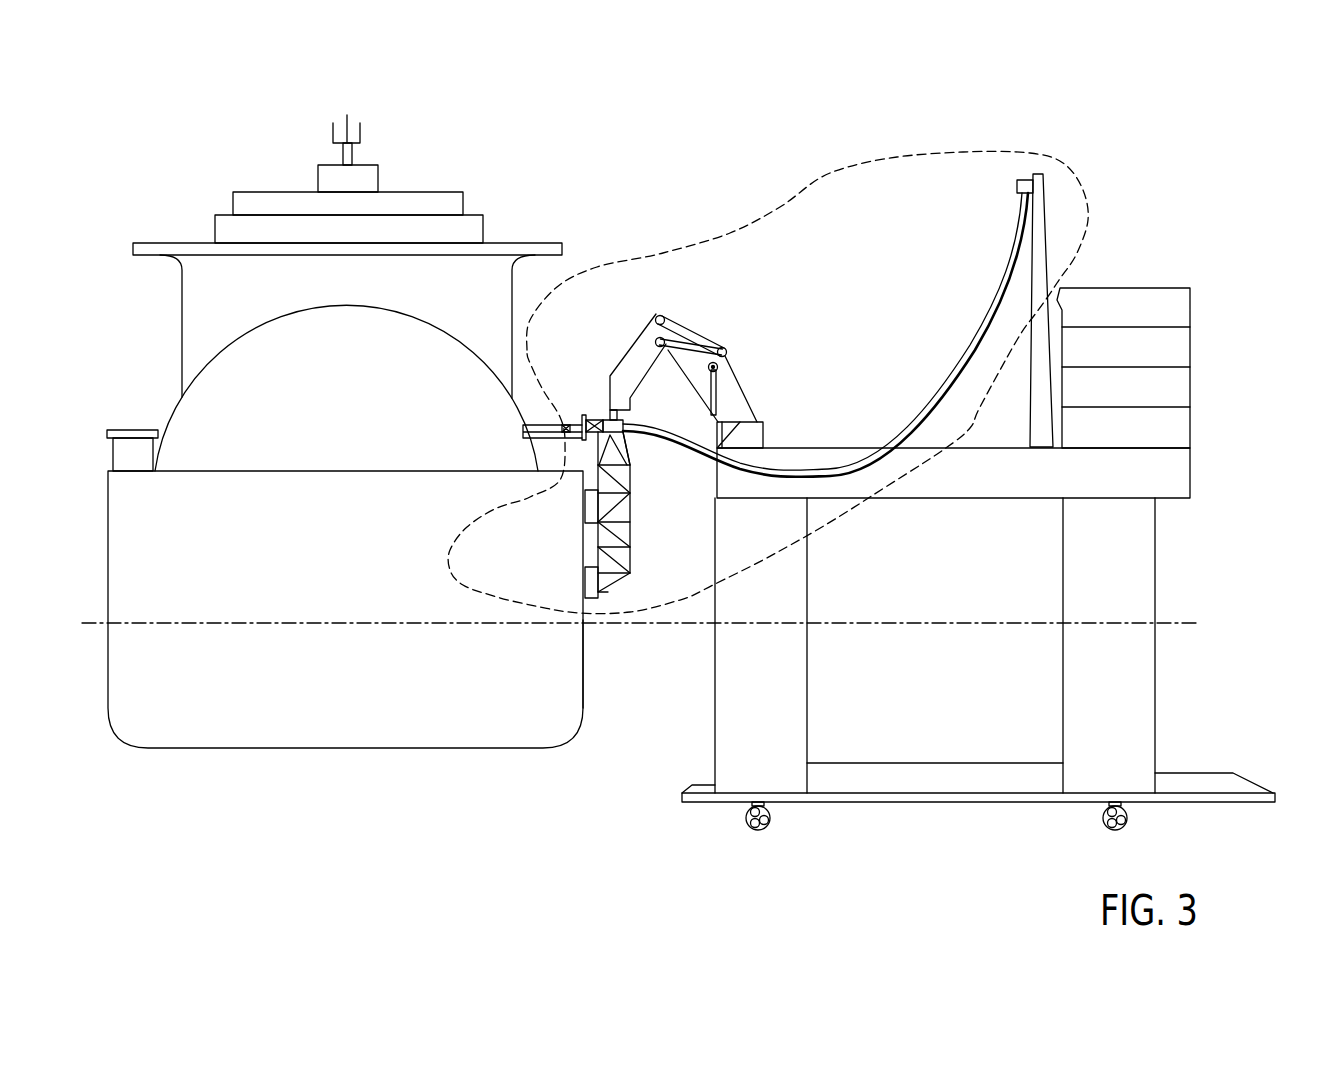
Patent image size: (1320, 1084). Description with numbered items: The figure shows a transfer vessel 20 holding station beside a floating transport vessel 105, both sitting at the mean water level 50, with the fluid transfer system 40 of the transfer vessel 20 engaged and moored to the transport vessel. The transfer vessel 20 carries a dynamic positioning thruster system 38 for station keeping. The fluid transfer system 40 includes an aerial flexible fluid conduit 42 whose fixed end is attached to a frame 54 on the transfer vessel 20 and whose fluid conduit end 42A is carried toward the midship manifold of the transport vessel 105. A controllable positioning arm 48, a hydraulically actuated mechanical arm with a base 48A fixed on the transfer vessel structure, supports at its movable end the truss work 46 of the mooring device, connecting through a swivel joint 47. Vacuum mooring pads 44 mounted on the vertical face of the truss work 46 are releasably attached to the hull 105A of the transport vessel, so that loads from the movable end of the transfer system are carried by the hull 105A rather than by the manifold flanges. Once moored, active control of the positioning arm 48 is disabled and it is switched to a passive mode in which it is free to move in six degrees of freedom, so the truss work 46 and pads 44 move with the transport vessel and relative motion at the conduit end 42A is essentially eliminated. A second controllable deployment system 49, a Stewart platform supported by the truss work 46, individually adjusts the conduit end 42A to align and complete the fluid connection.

The transport vessel 105 is at (137, 221).
The transport vessel hull 105A is at (590, 642).
The fluid conduit end 42A is at (594, 418).
The swivel joint 47 is at (619, 416).
The truss work 46 is at (633, 533).
The second controllable deployment system 49 is at (630, 446).
The vacuum mooring pads 44 is at (584, 505).
The controllable positioning arm 48 is at (743, 377).
The base 48A is at (785, 423).
The transfer vessel 20 is at (1115, 290).
The dynamic positioning thruster system 38 is at (772, 829).
The frame 54 is at (1047, 190).
The aerial flexible fluid conduit 42 is at (1003, 298).
The fluid transfer system 40 is at (755, 217).
The mean water level 50 is at (1203, 622).